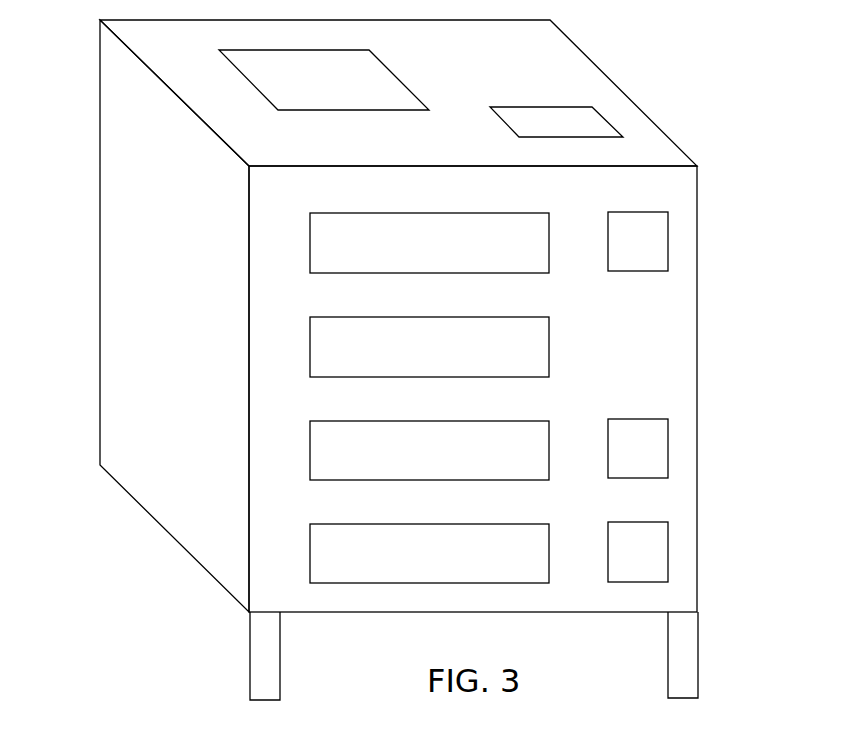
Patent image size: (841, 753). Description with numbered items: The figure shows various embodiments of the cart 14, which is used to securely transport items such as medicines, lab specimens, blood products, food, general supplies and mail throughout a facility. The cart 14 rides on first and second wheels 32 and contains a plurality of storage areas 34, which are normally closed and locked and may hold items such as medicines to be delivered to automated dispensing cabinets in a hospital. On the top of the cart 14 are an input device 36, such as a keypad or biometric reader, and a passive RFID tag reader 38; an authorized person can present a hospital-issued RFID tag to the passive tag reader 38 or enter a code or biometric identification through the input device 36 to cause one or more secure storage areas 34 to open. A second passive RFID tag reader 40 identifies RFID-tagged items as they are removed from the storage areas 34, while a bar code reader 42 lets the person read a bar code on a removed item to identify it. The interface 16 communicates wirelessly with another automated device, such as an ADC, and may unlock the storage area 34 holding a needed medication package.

The cart 14 is at (100, 280).
The interface 16 is at (638, 240).
The first and second wheels 32 is at (265, 657).
The storage areas 34 is at (416, 254).
The input device 36 is at (537, 133).
The passive radio frequency identification (RFID) tag reader 38 is at (310, 89).
The second passive RFID tag reader 40 is at (640, 551).
The bar code reader 42 is at (638, 447).